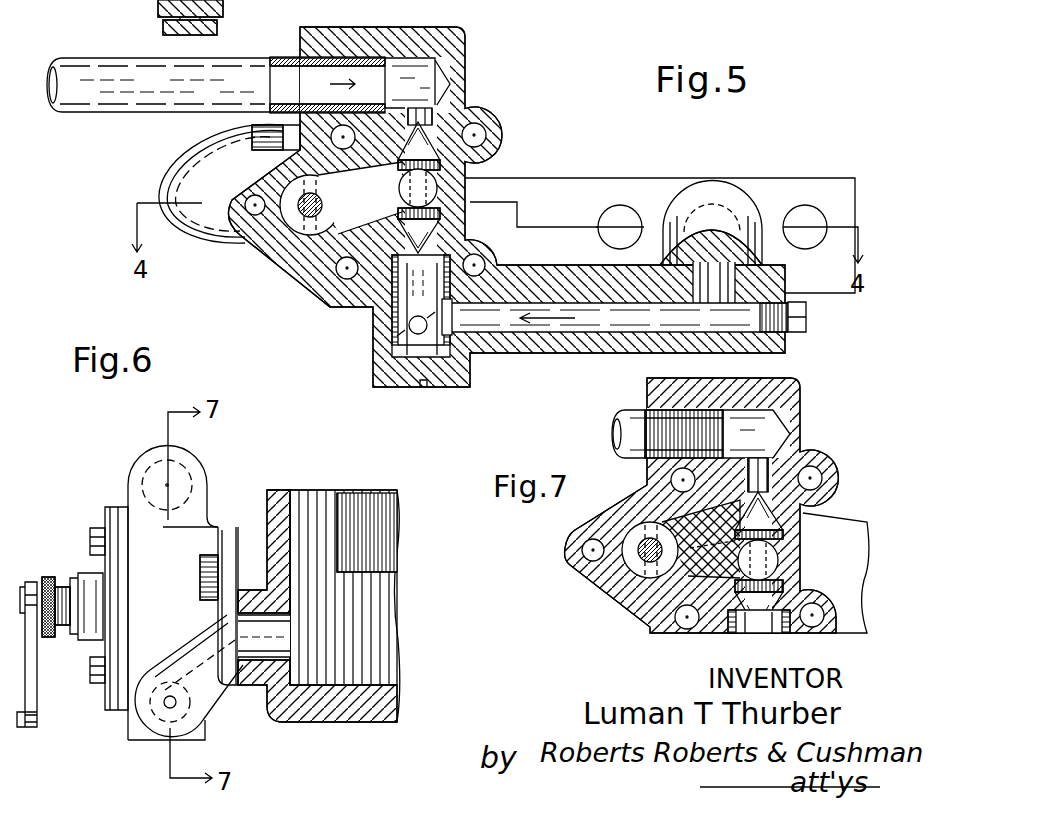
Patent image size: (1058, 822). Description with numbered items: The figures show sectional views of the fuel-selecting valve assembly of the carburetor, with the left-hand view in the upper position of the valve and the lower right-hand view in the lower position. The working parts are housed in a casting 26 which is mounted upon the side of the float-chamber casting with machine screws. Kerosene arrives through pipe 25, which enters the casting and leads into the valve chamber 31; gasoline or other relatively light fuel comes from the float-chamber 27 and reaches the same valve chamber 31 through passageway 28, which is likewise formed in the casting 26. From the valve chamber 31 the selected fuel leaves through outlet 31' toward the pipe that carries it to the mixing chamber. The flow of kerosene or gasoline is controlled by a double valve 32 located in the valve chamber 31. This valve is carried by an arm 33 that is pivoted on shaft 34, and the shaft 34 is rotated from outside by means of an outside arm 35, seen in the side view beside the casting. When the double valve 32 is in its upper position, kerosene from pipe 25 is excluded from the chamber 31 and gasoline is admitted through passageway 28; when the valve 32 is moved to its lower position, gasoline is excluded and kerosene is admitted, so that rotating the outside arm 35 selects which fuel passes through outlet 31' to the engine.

In FIG. 5, the pipe 25 is at (287, 68).
In FIG. 6, the pipe 25 is at (200, 462).
In FIG. 7, the pipe 25 is at (630, 433).
In FIG. 5, the casting 26 is at (455, 120).
In FIG. 6, the casting 26 is at (190, 547).
In FIG. 7, the casting 26 is at (647, 488).
In FIG. 6, the float-chamber 27 is at (370, 717).
In FIG. 5, the passageway 28 is at (502, 323).
In FIG. 6, the passageway 28 is at (258, 641).
In FIG. 7, the passageway 28 is at (770, 633).
In FIG. 5, the valve chamber 31 is at (322, 235).
In FIG. 7, the valve chamber 31 is at (659, 532).
In FIG. 5, the outlet 31' is at (489, 180).
In FIG. 7, the outlet 31' is at (758, 560).
In FIG. 5, the double valve 32 is at (430, 152).
In FIG. 7, the double valve 32 is at (762, 492).
In FIG. 5, the arm 33 is at (330, 148).
In FIG. 7, the arm 33 is at (694, 552).
In FIG. 5, the shaft 34 is at (307, 197).
In FIG. 6, the shaft 34 is at (37, 585).
In FIG. 7, the shaft 34 is at (646, 547).
In FIG. 5, the outside arm 35 is at (212, 32).
In FIG. 6, the outside arm 35 is at (37, 685).